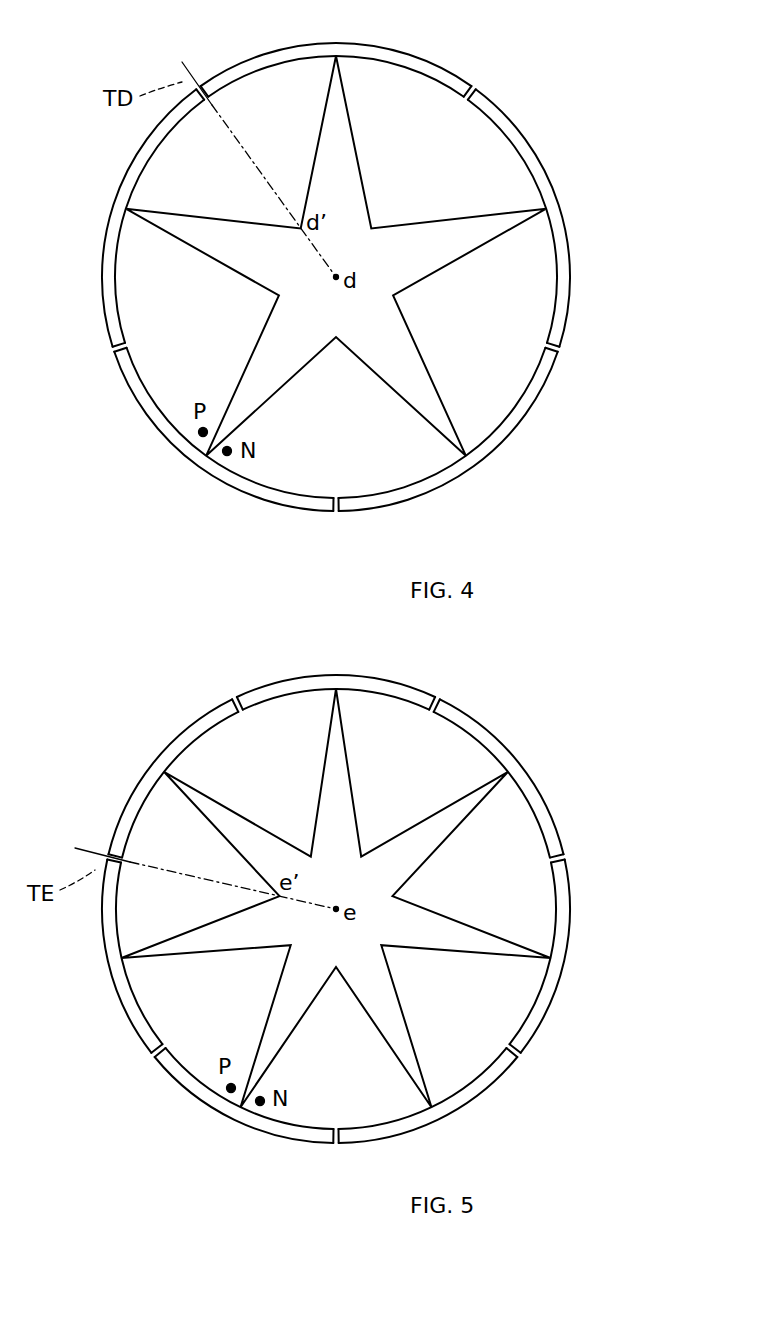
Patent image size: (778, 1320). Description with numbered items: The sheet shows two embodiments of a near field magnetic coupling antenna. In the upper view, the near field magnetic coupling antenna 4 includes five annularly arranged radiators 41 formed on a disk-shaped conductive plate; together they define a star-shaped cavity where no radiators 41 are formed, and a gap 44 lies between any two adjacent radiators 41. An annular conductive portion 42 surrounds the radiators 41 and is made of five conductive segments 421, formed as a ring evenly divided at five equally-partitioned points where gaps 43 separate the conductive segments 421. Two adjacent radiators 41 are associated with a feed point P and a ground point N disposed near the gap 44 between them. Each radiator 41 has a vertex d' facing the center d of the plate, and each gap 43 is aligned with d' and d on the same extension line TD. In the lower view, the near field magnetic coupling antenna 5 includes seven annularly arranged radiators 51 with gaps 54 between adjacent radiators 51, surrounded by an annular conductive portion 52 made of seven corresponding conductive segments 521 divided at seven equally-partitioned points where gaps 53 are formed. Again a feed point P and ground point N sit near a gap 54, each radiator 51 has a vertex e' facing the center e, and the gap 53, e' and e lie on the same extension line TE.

In FIG. 4, the near field magnetic coupling antenna 4 is at (573, 18).
In FIG. 4, the radiator 41 is at (336, 256).
In FIG. 4, the annular conductive portion 42 is at (393, 277).
In FIG. 4, the conductive segment 421 is at (638, 392).
In FIG. 4, the gap 43 is at (203, 84).
In FIG. 4, the gap 44 is at (337, 58).
In FIG. 5, the near field magnetic coupling antenna 5 is at (553, 638).
In FIG. 5, the radiator 51 is at (336, 898).
In FIG. 5, the annular conductive portion 52 is at (393, 909).
In FIG. 5, the conductive segment 521 is at (638, 896).
In FIG. 5, the gap 53 is at (235, 700).
In FIG. 5, the gap 54 is at (337, 692).